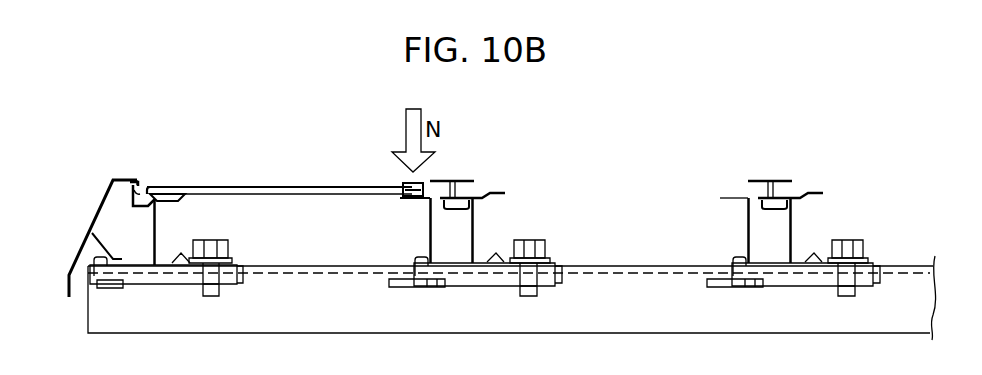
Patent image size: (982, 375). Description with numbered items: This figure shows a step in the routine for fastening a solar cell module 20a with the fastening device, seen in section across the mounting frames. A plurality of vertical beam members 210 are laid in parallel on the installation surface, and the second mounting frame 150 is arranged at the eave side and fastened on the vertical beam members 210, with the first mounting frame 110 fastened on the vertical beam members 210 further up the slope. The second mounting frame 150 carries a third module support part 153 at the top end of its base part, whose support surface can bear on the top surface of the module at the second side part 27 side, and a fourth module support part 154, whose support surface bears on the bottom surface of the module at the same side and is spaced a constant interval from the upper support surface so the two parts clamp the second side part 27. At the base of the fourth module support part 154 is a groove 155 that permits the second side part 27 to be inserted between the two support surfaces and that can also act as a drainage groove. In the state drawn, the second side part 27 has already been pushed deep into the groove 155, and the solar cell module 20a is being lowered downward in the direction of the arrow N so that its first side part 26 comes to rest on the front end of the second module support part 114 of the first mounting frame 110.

The second mounting frame 150 is at (102, 205).
The third module support part 153 is at (148, 180).
The second side part 27 is at (157, 182).
The solar cell module 20a is at (267, 186).
The first side part 26 is at (402, 188).
The second module support part 114 is at (405, 200).
The first mounting frame 110 is at (478, 199).
The fourth module support part 154 is at (173, 199).
The groove 155 is at (138, 210).
The vertical beam member 210 is at (907, 265).